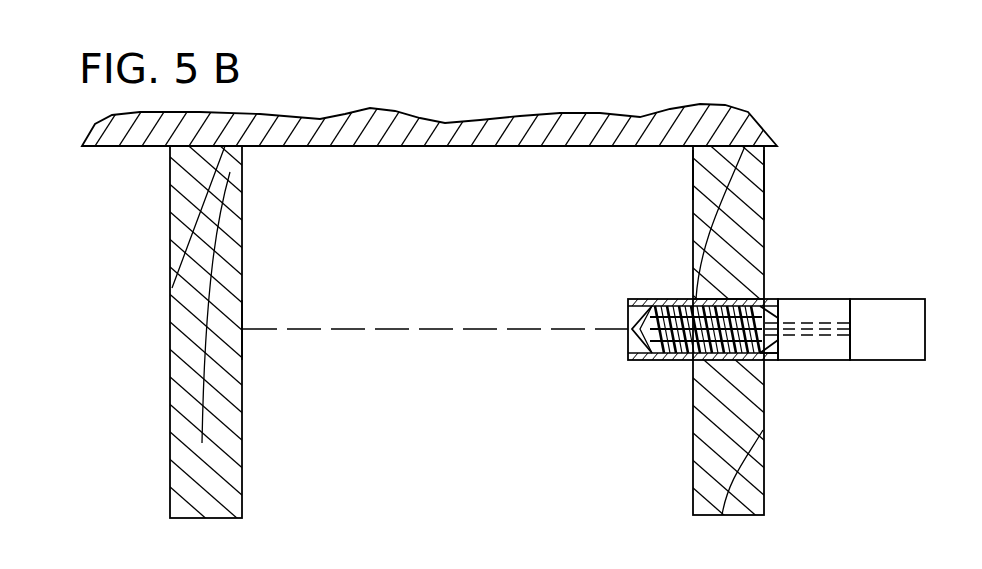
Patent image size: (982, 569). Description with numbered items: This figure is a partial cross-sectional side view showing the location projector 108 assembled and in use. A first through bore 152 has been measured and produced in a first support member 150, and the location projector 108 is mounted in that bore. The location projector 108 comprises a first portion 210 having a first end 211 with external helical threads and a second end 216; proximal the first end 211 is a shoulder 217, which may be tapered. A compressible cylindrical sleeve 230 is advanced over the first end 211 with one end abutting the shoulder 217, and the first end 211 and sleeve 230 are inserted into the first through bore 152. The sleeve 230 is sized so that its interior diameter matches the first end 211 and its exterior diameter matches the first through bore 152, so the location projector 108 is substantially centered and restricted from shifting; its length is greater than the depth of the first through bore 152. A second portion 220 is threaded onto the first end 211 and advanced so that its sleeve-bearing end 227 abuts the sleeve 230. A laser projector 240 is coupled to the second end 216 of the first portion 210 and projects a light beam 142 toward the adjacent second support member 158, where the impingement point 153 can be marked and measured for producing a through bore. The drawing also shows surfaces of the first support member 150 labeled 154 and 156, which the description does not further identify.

The location projector 108 is at (815, 258).
The light beam 142 is at (420, 326).
The first support member 150 is at (700, 193).
The first through bore 152 is at (718, 299).
The impingement point 153 is at (243, 330).
The outer surface 154 is at (766, 180).
The inner surface 156 is at (693, 167).
The second support member 158 is at (243, 202).
The first portion 210 is at (836, 299).
The first end 211 is at (648, 360).
The second end 216 is at (840, 360).
The shoulder 217 is at (760, 360).
The second portion 220 is at (644, 299).
The sleeve-bearing end 227 is at (684, 360).
The sleeve 230 is at (772, 299).
The laser projector 240 is at (892, 299).